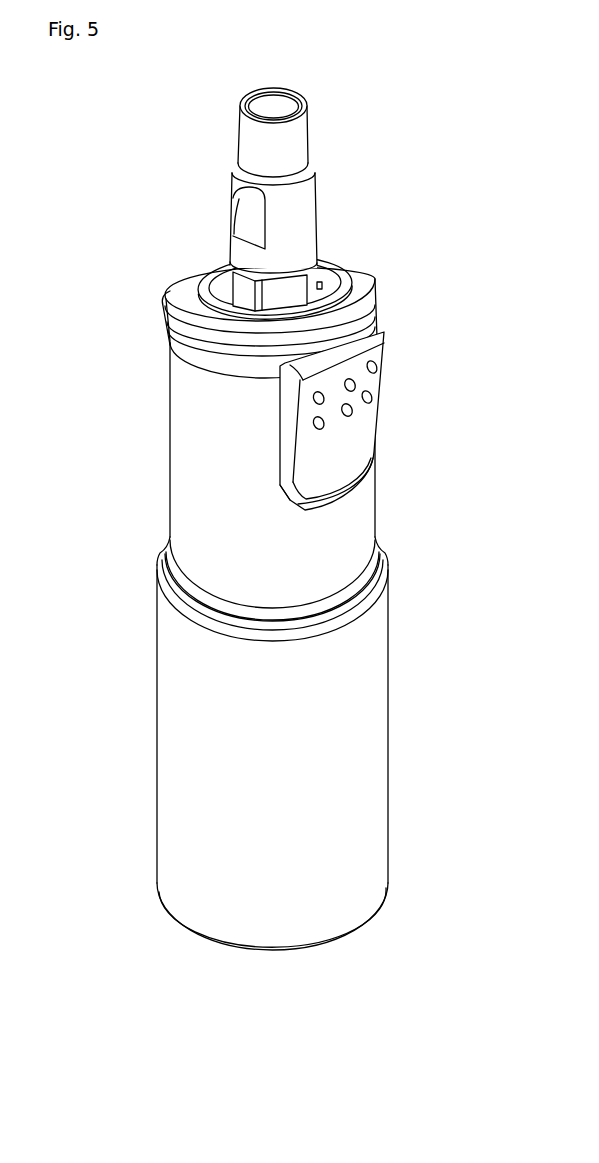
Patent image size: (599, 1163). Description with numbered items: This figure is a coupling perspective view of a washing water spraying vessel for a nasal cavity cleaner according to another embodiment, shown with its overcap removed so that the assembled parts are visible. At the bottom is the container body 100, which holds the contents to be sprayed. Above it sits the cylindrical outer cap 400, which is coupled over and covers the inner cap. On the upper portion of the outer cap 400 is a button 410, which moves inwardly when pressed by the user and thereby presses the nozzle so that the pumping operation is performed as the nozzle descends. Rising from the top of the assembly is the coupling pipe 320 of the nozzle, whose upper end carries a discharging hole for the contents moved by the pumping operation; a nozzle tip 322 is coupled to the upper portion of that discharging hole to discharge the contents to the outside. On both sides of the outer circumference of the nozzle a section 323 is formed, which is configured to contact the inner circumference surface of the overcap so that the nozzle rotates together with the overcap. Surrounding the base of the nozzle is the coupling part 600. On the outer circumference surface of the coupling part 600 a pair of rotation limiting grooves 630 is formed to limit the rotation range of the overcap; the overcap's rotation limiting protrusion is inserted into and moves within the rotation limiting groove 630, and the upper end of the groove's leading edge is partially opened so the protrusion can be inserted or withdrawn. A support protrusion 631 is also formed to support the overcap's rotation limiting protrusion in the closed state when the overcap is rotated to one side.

The container body 100 is at (348, 754).
The coupling pipe 320 is at (300, 217).
The nozzle tip 322 is at (272, 107).
The section 323 is at (248, 219).
The outer cap 400 is at (195, 447).
The button 410 is at (355, 438).
The coupling part 600 is at (347, 304).
The rotation limiting groove 630 is at (230, 268).
The support protrusion 631 is at (336, 272).